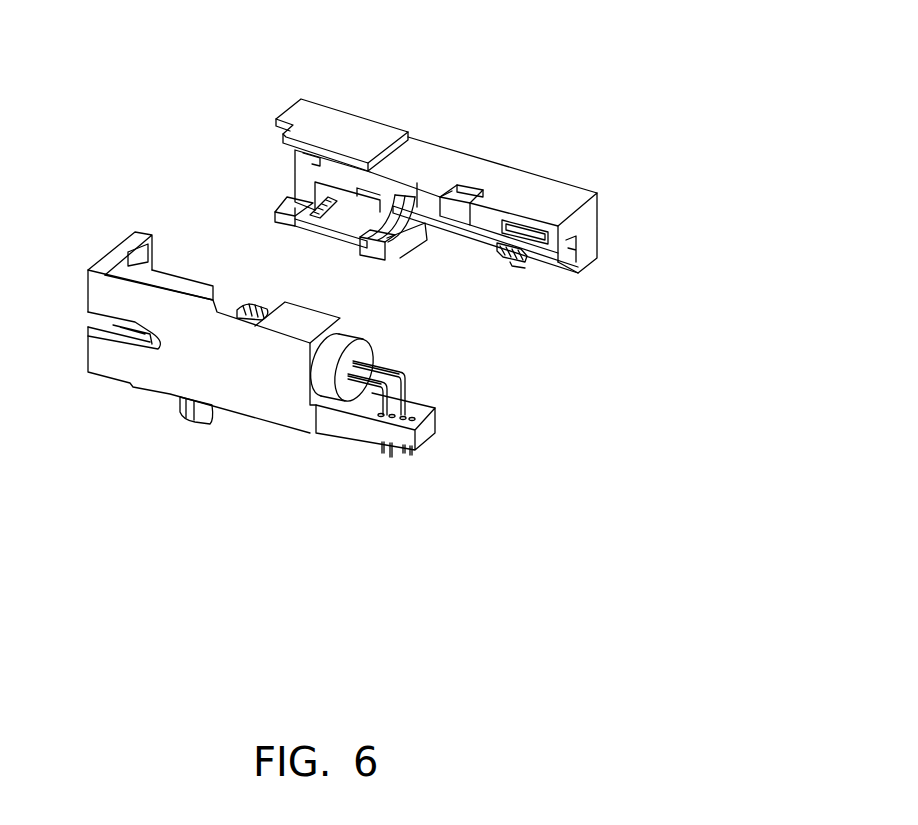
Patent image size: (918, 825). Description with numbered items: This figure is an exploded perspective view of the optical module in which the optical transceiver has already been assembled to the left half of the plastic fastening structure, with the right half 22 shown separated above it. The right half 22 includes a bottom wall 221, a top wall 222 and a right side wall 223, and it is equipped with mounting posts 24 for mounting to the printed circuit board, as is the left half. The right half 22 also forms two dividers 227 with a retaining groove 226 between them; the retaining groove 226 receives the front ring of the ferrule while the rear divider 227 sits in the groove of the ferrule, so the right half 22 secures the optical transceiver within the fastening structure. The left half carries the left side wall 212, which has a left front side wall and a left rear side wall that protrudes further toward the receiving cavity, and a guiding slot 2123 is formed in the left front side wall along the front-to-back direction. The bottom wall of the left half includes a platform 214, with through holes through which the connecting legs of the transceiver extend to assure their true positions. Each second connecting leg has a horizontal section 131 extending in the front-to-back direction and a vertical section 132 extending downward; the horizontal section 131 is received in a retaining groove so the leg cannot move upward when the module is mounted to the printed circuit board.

The right half 22 is at (390, 180).
The top wall 222 is at (364, 137).
The right side wall 223 is at (460, 199).
The bottom wall 221 is at (288, 210).
The dividers 227 is at (320, 235).
The retaining groove 226 is at (368, 255).
The guiding slot 2123 is at (98, 325).
The left side wall 212 is at (270, 364).
The mounting posts 24 is at (198, 410).
The horizontal section 131 is at (377, 362).
The terminal legs 132 is at (410, 390).
The platform 214 is at (367, 405).